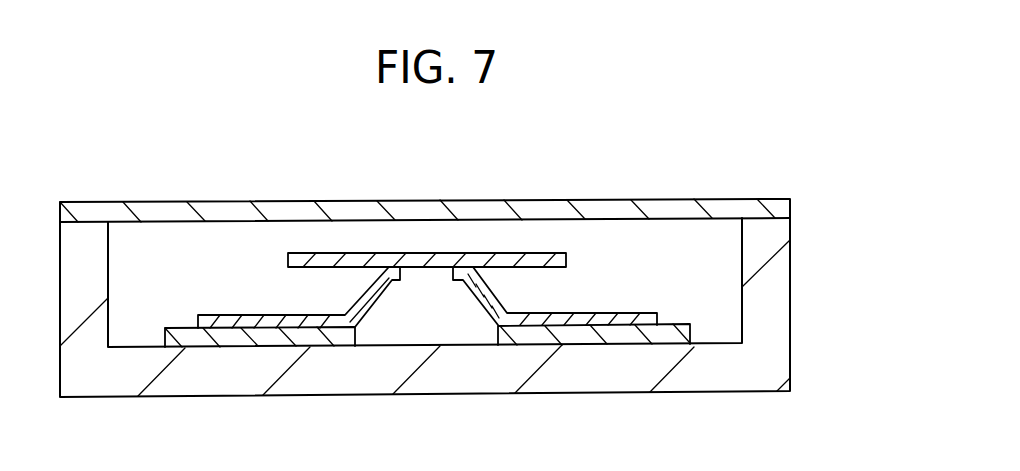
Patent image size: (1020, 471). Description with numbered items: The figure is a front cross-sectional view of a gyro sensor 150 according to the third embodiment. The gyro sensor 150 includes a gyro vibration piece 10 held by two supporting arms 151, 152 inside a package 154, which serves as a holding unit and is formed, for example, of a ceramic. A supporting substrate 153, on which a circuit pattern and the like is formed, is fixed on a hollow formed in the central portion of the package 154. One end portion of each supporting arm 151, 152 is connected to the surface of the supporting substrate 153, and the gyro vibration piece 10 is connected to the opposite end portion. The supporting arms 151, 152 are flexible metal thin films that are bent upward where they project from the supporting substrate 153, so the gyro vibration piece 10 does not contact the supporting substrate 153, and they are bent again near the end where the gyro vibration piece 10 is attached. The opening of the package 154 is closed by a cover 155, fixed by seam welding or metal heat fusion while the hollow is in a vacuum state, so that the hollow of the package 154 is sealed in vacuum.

The gyro vibration piece 10 is at (471, 253).
The gyro sensor 150 is at (799, 177).
The supporting arm 151 is at (362, 303).
The supporting arm 152 is at (493, 303).
The supporting substrate 153 is at (238, 342).
The package 154 is at (750, 365).
The cover 155 is at (744, 207).